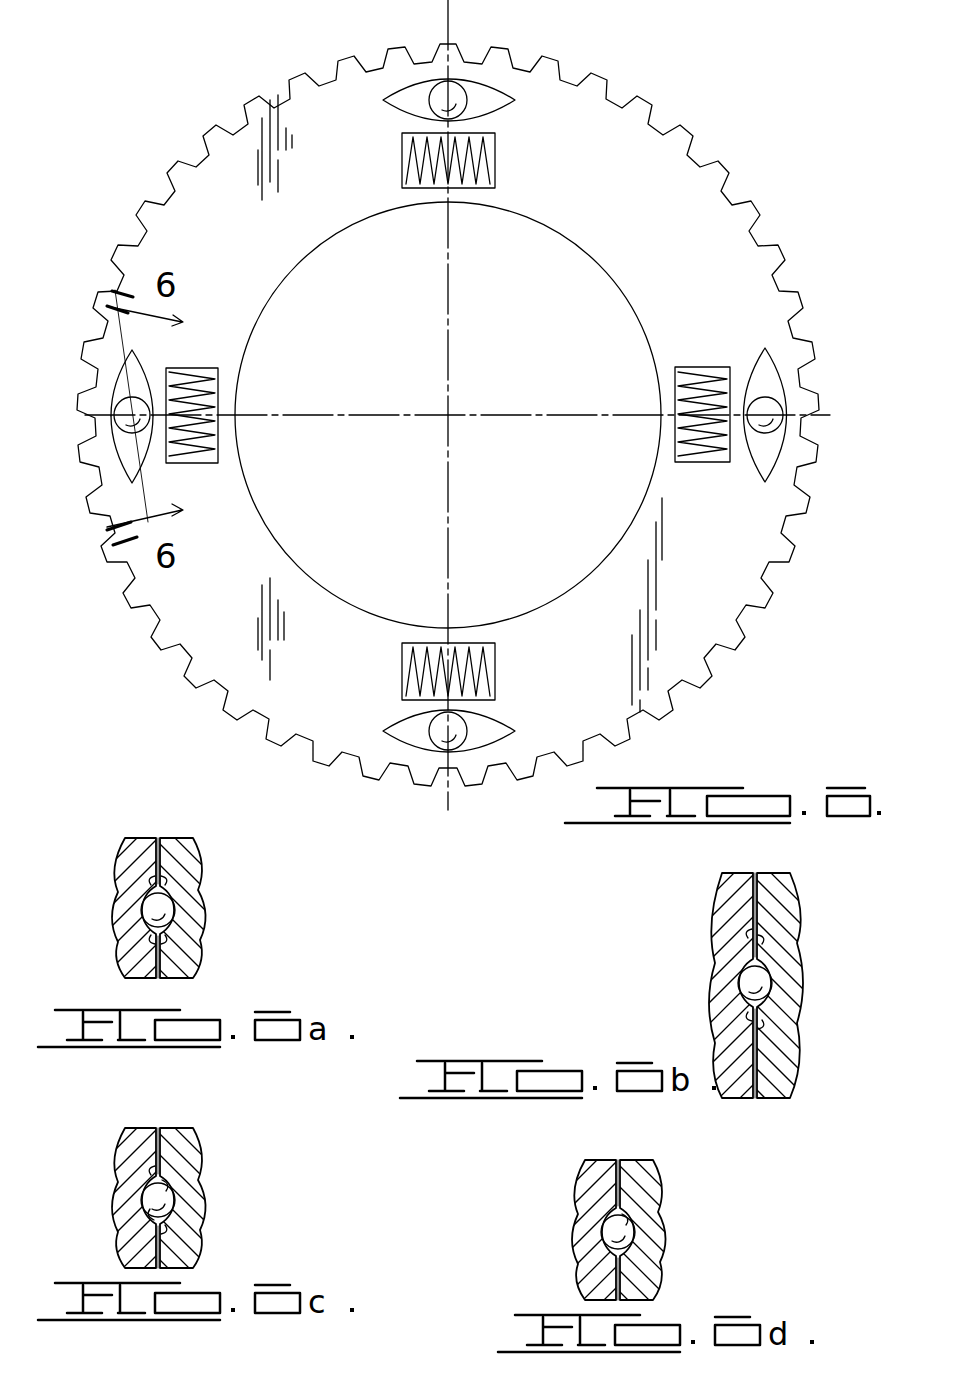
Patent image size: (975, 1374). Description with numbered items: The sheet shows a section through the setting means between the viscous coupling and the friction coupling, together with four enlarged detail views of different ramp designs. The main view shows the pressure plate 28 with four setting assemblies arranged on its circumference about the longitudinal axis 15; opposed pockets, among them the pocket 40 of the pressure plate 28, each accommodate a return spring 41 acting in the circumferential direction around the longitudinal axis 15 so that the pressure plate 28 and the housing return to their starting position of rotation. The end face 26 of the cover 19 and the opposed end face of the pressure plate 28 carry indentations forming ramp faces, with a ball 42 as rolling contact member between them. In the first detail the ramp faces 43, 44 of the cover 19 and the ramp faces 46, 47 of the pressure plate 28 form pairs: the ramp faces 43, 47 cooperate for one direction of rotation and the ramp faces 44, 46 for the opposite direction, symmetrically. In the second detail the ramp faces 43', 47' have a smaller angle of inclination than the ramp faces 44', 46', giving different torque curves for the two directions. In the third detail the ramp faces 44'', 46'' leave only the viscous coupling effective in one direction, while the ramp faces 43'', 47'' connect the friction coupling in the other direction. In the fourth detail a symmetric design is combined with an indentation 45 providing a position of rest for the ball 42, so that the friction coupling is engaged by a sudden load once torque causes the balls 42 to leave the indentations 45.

In FIG. 5, the longitudinal axis 15 is at (452, 420).
In FIG. 6A, the cover 19 is at (101, 908).
In FIG. 5, the end face 26 is at (692, 260).
In FIG. 6A, the end face 26 is at (197, 893).
In FIG. 6B, the end face 26 is at (802, 980).
In FIG. 6C, the end face 26 is at (184, 1170).
In FIG. 5, the pressure plate 28 is at (722, 108).
In FIG. 6A, the pressure plate 28 is at (222, 908).
In FIG. 6B, the pressure plate 28 is at (813, 985).
In FIG. 6C, the pressure plate 28 is at (218, 1198).
In FIG. 6D, the pressure plate 28 is at (678, 1230).
In FIG. 5, the pocket 40 is at (495, 178).
In FIG. 5, the return spring 41 is at (196, 402).
In FIG. 5, the ball 42 is at (462, 97).
In FIG. 6A, the ball 42 is at (118, 900).
In FIG. 6B, the ball 42 is at (715, 974).
In FIG. 6C, the ball 42 is at (116, 1190).
In FIG. 6D, the ball 42 is at (576, 1223).
In FIG. 6A, the ramp face 43 is at (114, 858).
In FIG. 6B, the ramp face 43' is at (712, 913).
In FIG. 6C, the ramp face 43'' is at (115, 1137).
In FIG. 6A, the ramp face 44 is at (109, 959).
In FIG. 6B, the ramp face 44' is at (705, 1019).
In FIG. 6C, the ramp face 44'' is at (106, 1232).
In FIG. 6D, the indentation 45 is at (674, 1188).
In FIG. 5, the ramp face 46 is at (93, 363).
In FIG. 6A, the ramp face 46 is at (215, 866).
In FIG. 6B, the ramp face 46' is at (816, 937).
In FIG. 6C, the ramp face 46'' is at (217, 1164).
In FIG. 5, the ramp face 47 is at (95, 459).
In FIG. 6A, the ramp face 47 is at (207, 960).
In FIG. 6B, the ramp face 47' is at (811, 1040).
In FIG. 6C, the ramp face 47'' is at (220, 1239).